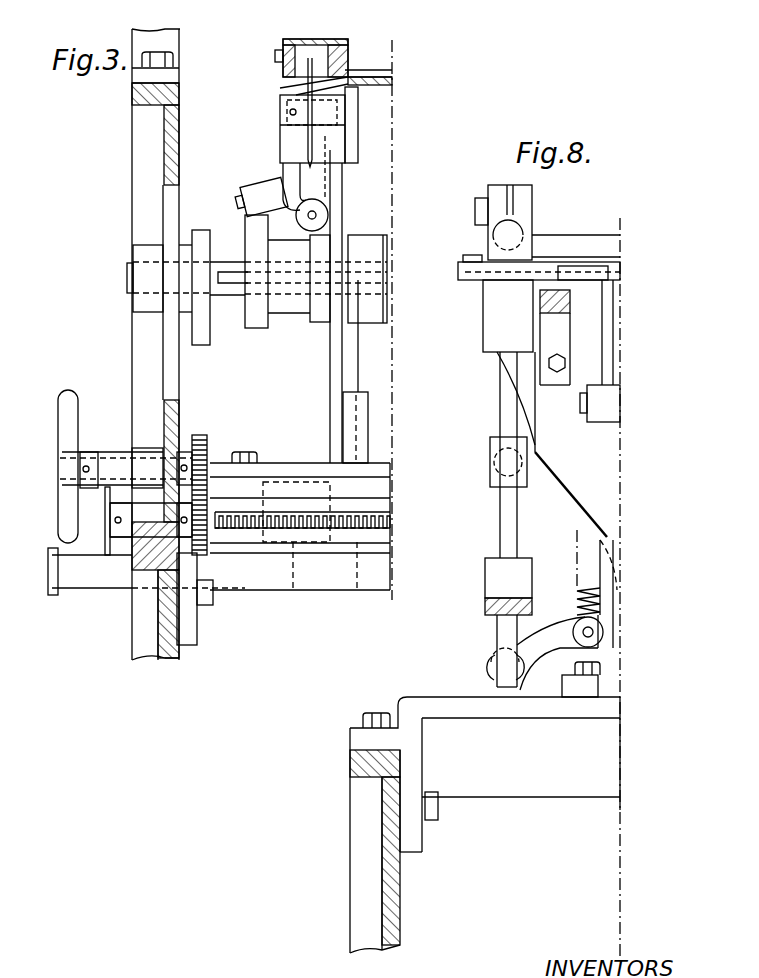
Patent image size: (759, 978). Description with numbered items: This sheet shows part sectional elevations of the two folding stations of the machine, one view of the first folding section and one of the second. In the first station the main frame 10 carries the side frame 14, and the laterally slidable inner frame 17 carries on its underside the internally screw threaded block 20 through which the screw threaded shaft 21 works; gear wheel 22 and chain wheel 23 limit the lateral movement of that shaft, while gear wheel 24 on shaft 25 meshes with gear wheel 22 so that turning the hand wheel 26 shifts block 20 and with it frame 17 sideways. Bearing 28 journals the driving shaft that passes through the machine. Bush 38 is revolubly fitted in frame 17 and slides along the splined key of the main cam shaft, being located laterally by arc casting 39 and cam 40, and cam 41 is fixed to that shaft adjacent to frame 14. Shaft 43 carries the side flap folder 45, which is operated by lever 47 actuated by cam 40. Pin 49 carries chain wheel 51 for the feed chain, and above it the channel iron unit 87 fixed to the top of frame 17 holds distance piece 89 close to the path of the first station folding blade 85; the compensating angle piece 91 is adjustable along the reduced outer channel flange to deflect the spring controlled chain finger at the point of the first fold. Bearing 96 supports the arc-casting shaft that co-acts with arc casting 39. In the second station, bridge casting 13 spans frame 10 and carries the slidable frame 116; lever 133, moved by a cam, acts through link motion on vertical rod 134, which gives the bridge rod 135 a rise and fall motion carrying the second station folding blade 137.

In FIG. 3, the bearing 96 is at (165, 43).
In FIG. 3, the compensating angle piece 91 is at (283, 43).
In FIG. 3, the channel iron unit 87 is at (348, 43).
In FIG. 3, the distance piece 89 is at (348, 72).
In FIG. 3, the first station folding blade 85 is at (392, 80).
In FIG. 3, the chain wheel 51 is at (306, 80).
In FIG. 3, the pin 49 is at (345, 117).
In FIG. 3, the side flap folder 45 is at (292, 152).
In FIG. 3, the lever 47 is at (285, 200).
In FIG. 3, the shaft 43 is at (316, 213).
In FIG. 3, the bush 38 is at (359, 244).
In FIG. 3, the cam 41 is at (200, 235).
In FIG. 3, the cam 40 is at (266, 318).
In FIG. 3, the arc casting 39 is at (360, 352).
In FIG. 3, the inner frame 17 is at (330, 400).
In FIG. 3, the hand wheel 26 is at (68, 392).
In FIG. 3, the shaft 25 is at (113, 466).
In FIG. 3, the side frame 14 is at (180, 412).
In FIG. 3, the gear wheel 24 is at (210, 447).
In FIG. 3, the gear wheel 22 is at (210, 522).
In FIG. 3, the chain wheel 23 is at (105, 560).
In FIG. 3, the internally screw threaded block 20 is at (300, 535).
In FIG. 3, the screw threaded shaft 21 is at (302, 565).
In FIG. 3, the bearing 28 is at (200, 625).
In FIG. 3, the frame 10 is at (172, 652).
In FIG. 8, the frame 10 is at (395, 898).
In FIG. 8, the bridge rod 135 is at (495, 240).
In FIG. 8, the second station folding blade 137 is at (470, 276).
In FIG. 8, the vertical rod 134 is at (500, 510).
In FIG. 8, the frame 116 is at (572, 477).
In FIG. 8, the lever 133 is at (540, 637).
In FIG. 8, the bridge casting 13 is at (430, 706).